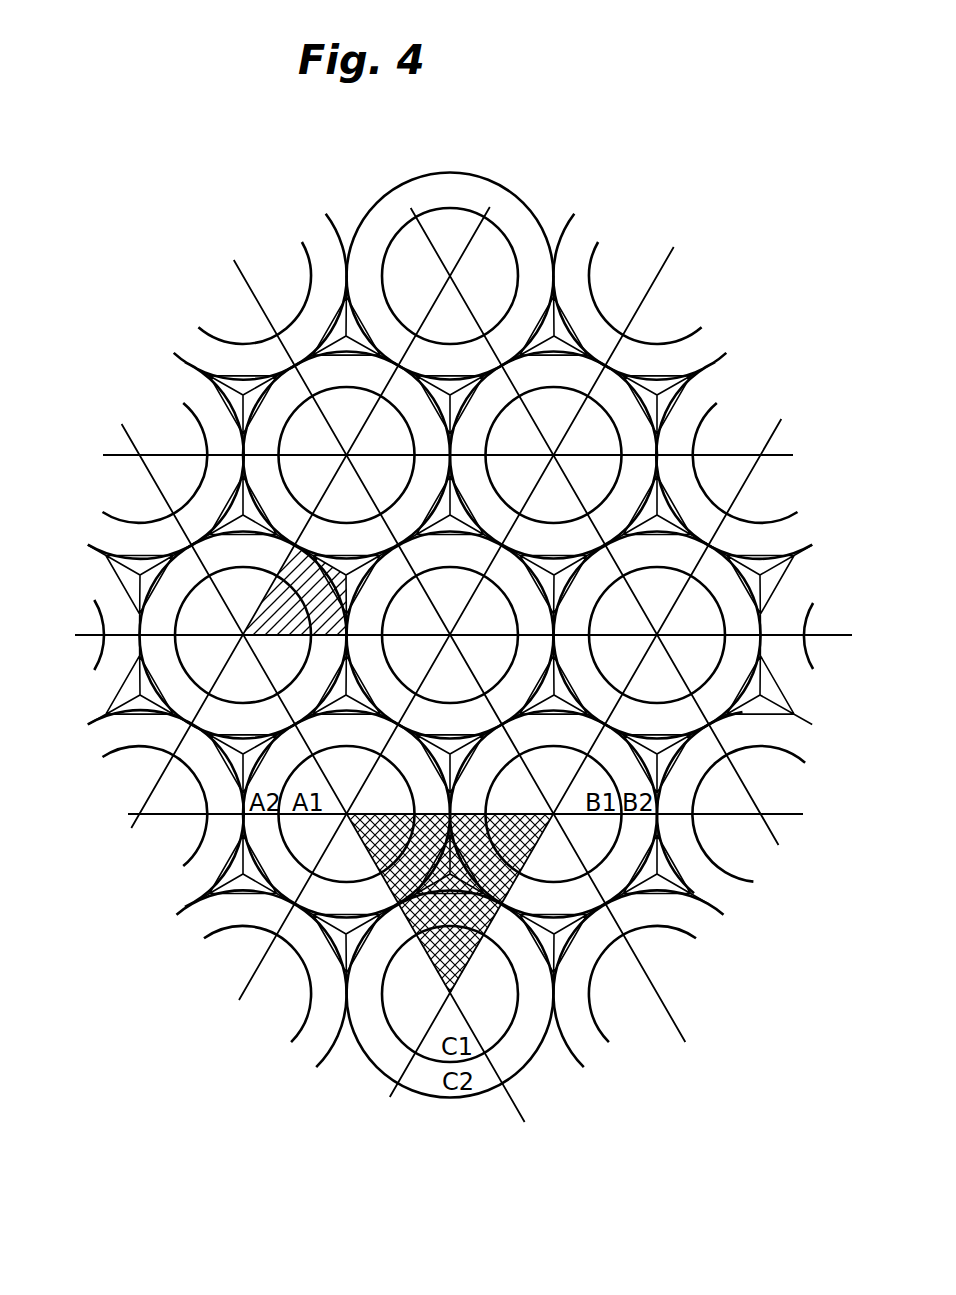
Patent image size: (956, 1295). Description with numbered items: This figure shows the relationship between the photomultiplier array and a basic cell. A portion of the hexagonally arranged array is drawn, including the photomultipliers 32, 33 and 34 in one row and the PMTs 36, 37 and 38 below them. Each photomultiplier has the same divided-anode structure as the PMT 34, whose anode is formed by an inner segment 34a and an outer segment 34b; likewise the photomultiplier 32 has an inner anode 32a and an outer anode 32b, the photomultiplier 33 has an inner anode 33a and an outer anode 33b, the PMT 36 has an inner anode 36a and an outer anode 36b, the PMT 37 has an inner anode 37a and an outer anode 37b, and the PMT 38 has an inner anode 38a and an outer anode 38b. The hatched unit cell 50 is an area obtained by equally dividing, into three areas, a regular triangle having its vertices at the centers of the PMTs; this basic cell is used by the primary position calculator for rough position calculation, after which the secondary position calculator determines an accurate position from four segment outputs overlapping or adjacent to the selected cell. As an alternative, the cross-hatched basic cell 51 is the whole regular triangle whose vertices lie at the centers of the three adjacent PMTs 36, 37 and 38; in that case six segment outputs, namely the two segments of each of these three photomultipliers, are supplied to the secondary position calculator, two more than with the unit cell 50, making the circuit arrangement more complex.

The photomultiplier 32 is at (197, 629).
The inner anode 32a is at (200, 655).
The outer anode 32b is at (173, 722).
The photomultiplier 33 is at (465, 597).
The inner anode 33a is at (437, 588).
The outer anode 33b is at (522, 595).
The PMT 34 is at (705, 598).
The inner segment (anode) 34a is at (715, 620).
The outer segment (anode) 34b is at (745, 575).
The PMT 36 is at (332, 827).
The inner anode 36a is at (332, 868).
The outer anode 36b is at (290, 868).
The PMT 37 is at (606, 826).
The inner anode 37a is at (568, 862).
The outer anode 37b is at (662, 832).
The PMT 38 is at (439, 1012).
The inner anode 38a is at (408, 1004).
The outer anode 38b is at (399, 1060).
The unit cell 50 is at (336, 566).
The basic cell 51 is at (456, 830).